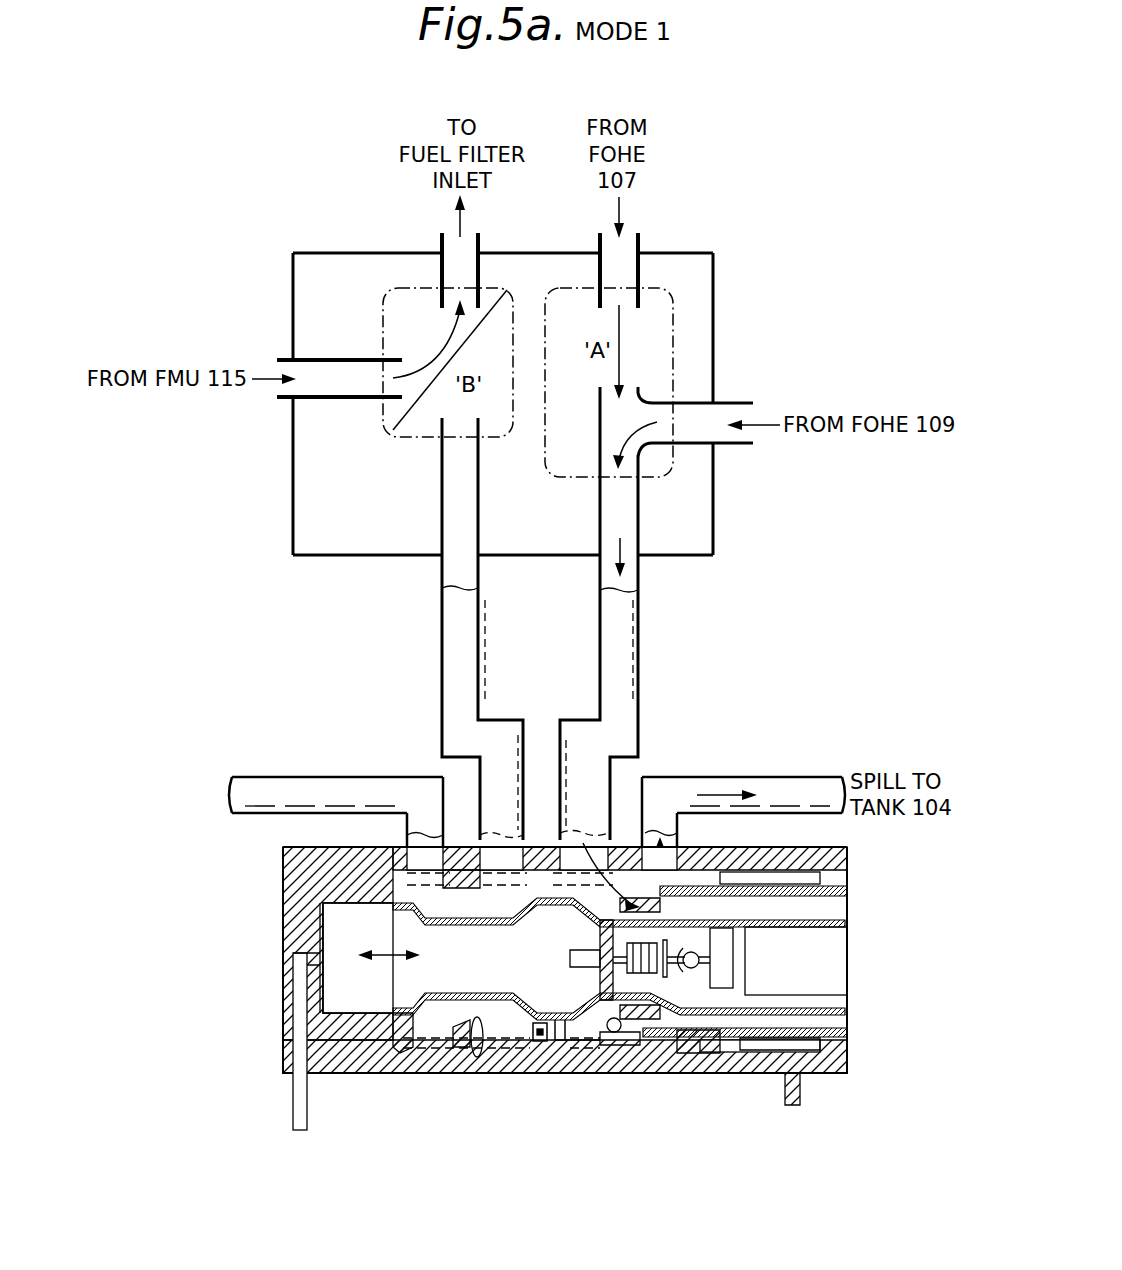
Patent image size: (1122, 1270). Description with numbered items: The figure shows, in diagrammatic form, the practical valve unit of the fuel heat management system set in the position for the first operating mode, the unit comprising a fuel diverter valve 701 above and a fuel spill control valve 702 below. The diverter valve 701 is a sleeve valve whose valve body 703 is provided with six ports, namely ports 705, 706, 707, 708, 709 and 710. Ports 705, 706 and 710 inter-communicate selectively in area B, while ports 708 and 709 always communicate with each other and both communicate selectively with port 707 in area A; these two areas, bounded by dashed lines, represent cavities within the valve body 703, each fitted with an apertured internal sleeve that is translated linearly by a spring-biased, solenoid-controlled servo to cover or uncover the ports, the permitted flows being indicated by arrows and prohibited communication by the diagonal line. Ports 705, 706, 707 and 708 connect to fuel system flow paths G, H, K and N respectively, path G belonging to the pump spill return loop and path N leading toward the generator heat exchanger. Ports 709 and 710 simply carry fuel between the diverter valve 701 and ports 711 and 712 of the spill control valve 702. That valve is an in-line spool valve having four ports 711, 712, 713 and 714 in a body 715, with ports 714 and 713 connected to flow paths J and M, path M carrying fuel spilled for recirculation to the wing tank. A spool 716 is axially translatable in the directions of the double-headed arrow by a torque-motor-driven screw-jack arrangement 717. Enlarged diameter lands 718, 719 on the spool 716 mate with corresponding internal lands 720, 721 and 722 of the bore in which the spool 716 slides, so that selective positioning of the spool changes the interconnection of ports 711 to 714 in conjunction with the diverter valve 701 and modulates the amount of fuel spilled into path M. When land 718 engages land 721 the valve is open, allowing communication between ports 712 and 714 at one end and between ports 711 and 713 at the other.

The fuel diverter valve 701 is at (722, 287).
The fuel spill control valve 702 is at (275, 975).
The valve body 703 is at (327, 267).
The port 705 is at (322, 388).
The port 706 is at (443, 247).
The port 707 is at (636, 247).
The port 708 is at (738, 403).
The port 709 is at (623, 523).
The port 710 is at (467, 523).
The port 711 is at (573, 870).
The port 712 is at (493, 870).
The port 713 is at (680, 862).
The port 714 is at (430, 862).
The body 715 is at (292, 882).
The spool 716 is at (410, 1052).
The torque-motor-driven screw-jack arrangement 717 is at (777, 975).
The enlarged diameter land 718 is at (585, 1058).
The enlarged diameter land 719 is at (687, 1045).
The internal land 720 is at (475, 1058).
The internal land 721 is at (540, 1045).
The internal land 722 is at (610, 1050).
The flow path G is at (293, 355).
The flow path H is at (480, 247).
The flow path J is at (268, 777).
The flow path K is at (598, 240).
The flow path M is at (805, 777).
The flow path N is at (740, 445).